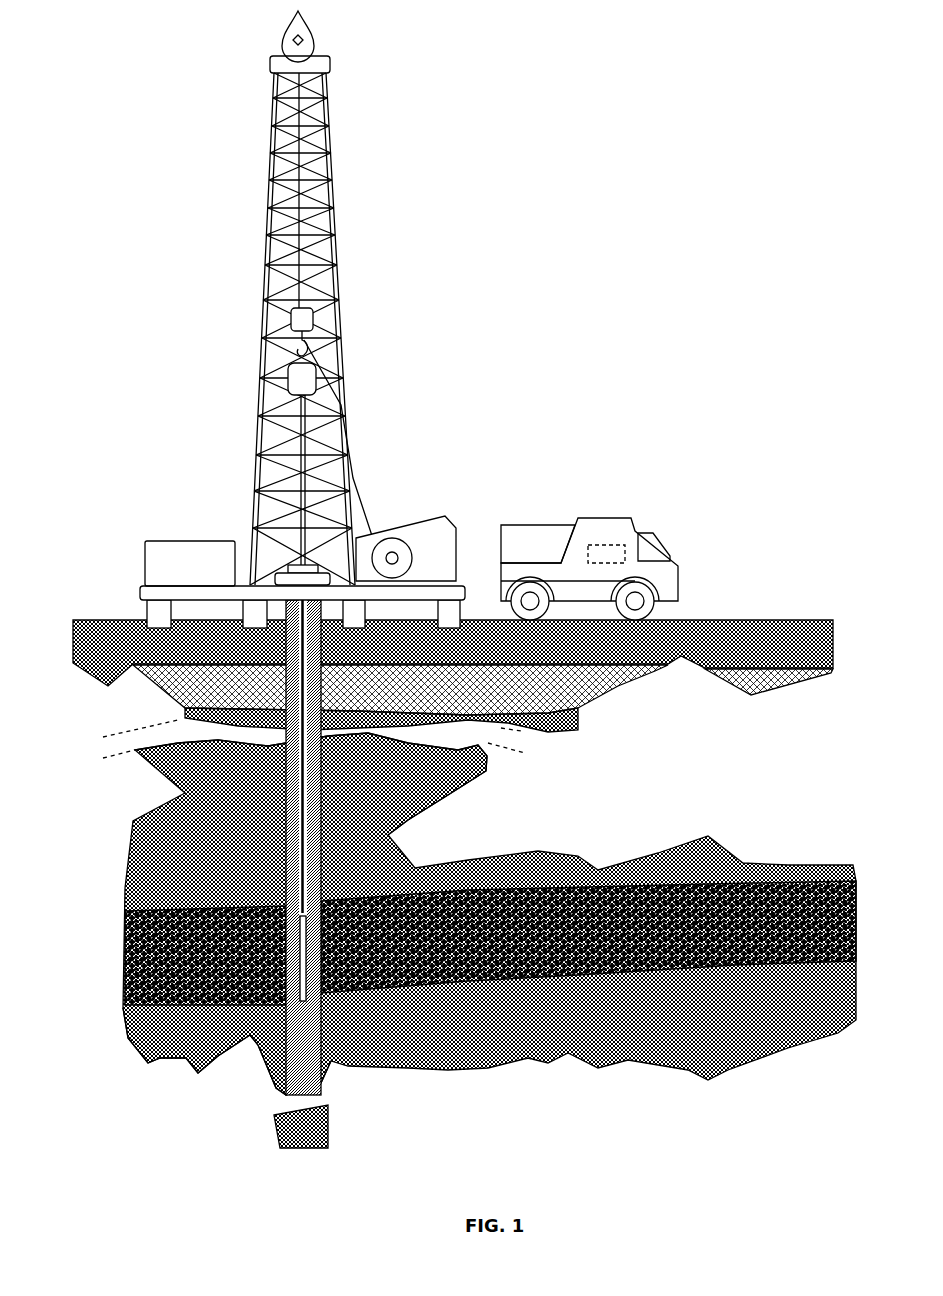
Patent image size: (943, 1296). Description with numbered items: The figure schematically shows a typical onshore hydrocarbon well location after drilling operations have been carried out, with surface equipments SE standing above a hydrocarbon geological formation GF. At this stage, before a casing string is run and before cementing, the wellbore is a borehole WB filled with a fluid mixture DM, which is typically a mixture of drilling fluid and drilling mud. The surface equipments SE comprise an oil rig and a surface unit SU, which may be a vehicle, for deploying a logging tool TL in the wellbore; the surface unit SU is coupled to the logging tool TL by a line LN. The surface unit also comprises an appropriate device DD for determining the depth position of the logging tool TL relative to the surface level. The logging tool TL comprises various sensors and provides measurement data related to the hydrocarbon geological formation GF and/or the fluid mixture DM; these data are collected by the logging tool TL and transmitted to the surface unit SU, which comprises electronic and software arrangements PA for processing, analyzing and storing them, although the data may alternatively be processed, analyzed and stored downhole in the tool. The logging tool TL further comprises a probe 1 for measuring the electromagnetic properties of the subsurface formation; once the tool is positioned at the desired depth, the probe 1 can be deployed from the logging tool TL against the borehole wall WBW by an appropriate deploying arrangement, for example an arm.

The surface equipments SE is at (499, 223).
The depth determining device DD is at (386, 548).
The surface unit SU is at (611, 528).
The electronic and software arrangements PA is at (610, 540).
The hydrocarbon geological formation GF is at (444, 875).
The line LN is at (445, 783).
The borehole wall WBW is at (393, 827).
The probe 1 is at (117, 937).
The logging tool TL is at (277, 1033).
The fluid mixture DM is at (243, 1037).
The borehole WB is at (300, 1088).